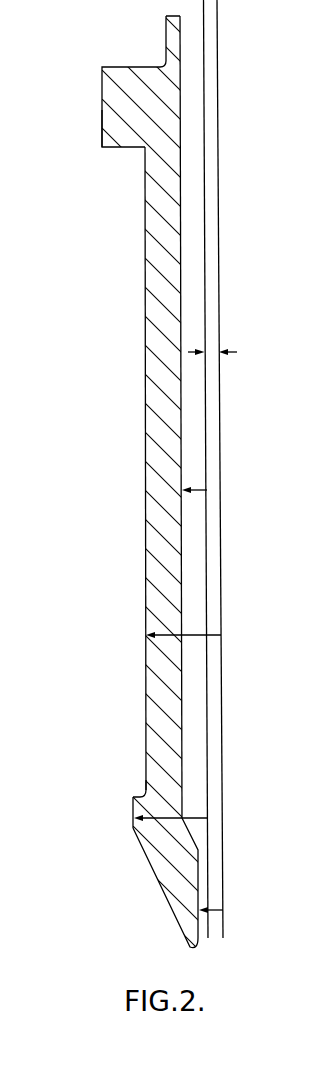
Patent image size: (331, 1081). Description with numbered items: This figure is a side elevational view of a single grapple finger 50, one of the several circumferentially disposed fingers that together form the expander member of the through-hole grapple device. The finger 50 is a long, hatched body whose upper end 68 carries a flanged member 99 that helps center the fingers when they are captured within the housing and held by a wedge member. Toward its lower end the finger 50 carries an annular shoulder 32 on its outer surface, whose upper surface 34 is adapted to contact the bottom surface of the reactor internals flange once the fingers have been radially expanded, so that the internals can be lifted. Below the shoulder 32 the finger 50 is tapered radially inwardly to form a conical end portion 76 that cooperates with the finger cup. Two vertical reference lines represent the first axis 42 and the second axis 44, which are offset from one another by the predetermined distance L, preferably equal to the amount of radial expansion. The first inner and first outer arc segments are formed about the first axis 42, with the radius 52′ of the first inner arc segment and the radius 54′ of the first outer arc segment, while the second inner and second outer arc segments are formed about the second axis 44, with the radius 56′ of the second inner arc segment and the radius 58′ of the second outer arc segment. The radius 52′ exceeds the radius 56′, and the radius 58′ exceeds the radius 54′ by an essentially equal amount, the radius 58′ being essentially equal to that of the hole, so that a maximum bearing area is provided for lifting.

The grapple finger 50 is at (138, 242).
The upper end of the finger 68 is at (97, 88).
The flanged member 99 is at (102, 130).
The upper surface 34 is at (140, 794).
The annular shoulder 32 is at (132, 800).
The conical end portion 76 is at (165, 897).
The second axis 44 is at (224, 143).
The first axis 42 is at (214, 209).
The predetermined offset distance L is at (221, 354).
The radius of the first inner arc segment 52′ is at (207, 490).
The radius of the second outer arc segment 58′ is at (195, 635).
The radius of the first outer arc segment 54′ is at (196, 817).
The radius of the second inner arc segment 56′ is at (212, 910).